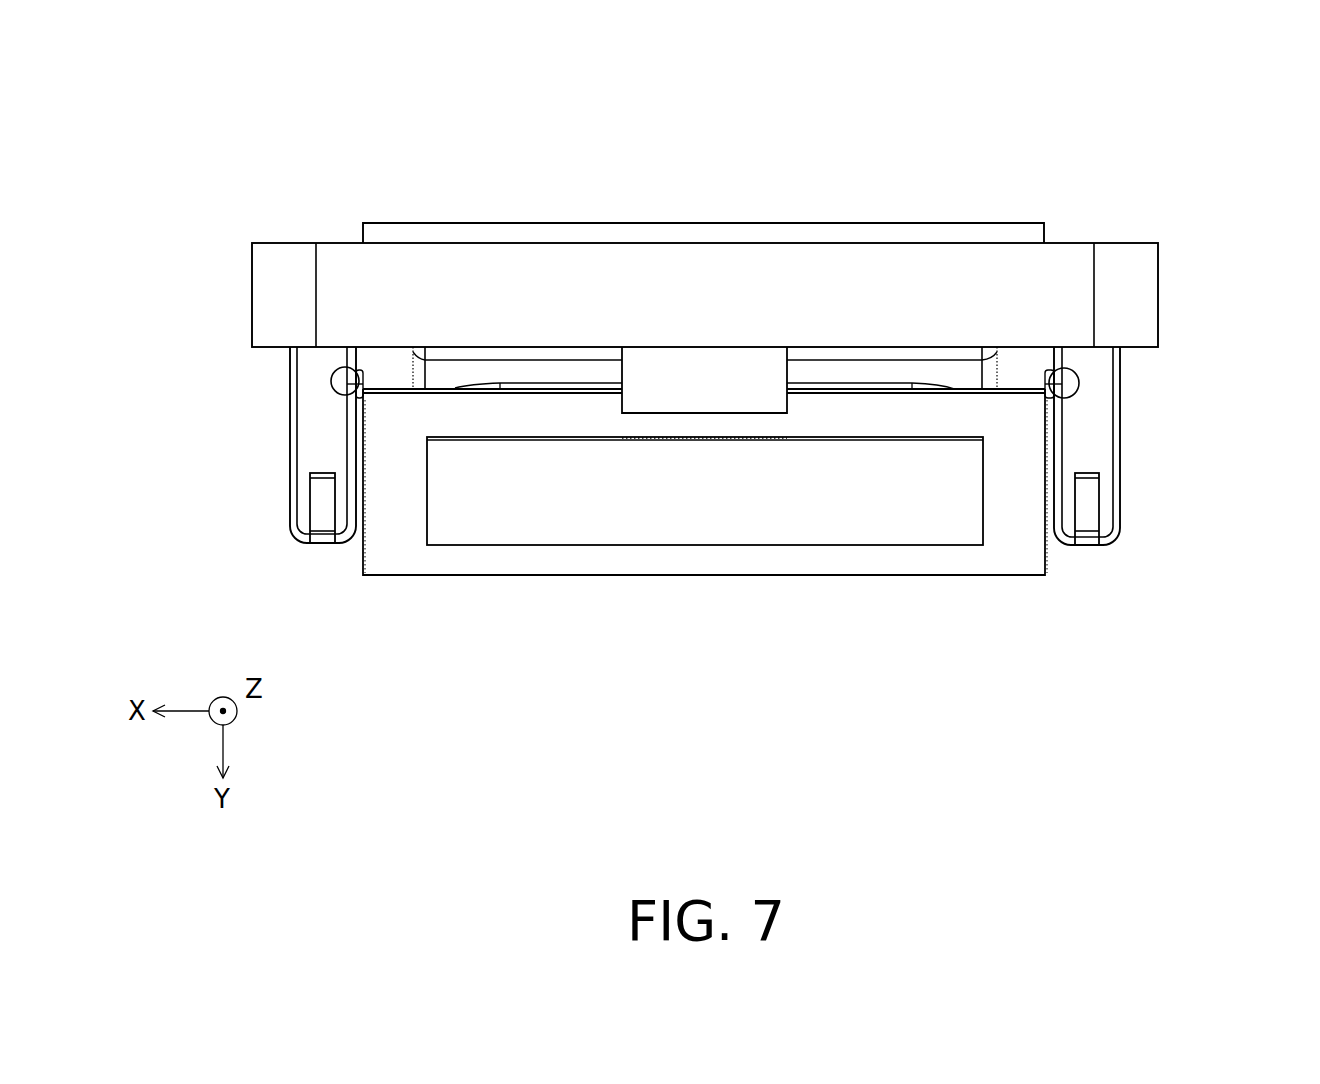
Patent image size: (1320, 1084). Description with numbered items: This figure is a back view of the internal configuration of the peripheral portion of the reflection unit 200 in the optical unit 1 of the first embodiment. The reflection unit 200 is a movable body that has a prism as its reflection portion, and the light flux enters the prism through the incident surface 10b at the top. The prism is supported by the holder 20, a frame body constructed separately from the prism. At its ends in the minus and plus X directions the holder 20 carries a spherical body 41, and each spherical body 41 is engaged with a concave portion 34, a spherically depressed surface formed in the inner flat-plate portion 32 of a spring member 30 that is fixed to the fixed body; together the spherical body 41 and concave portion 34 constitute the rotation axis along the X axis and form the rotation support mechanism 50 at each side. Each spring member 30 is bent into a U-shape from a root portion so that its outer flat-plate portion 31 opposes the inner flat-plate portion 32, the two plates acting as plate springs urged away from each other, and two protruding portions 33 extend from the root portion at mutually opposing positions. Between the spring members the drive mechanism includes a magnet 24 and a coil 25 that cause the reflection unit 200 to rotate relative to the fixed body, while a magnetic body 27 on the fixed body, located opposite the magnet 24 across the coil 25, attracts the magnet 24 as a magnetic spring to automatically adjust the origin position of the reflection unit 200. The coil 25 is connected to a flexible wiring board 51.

The optical unit 1 is at (1153, 172).
The reflection unit 200 is at (758, 200).
The incident surface 10b is at (722, 222).
The holder 20 is at (1015, 368).
The magnet 24 is at (572, 373).
The coil 25 is at (857, 383).
The magnetic body 27 is at (592, 496).
The spring member 30 is at (289, 435).
The outer flat-plate portion 31 is at (289, 502).
The inner flat-plate portion 32 is at (347, 433).
The protruding portion 33 is at (322, 493).
The concave portion 34 is at (335, 378).
The spherical body 41 is at (360, 380).
The rotation support mechanism 50 is at (272, 540).
The flexible wiring board 51 is at (358, 290).